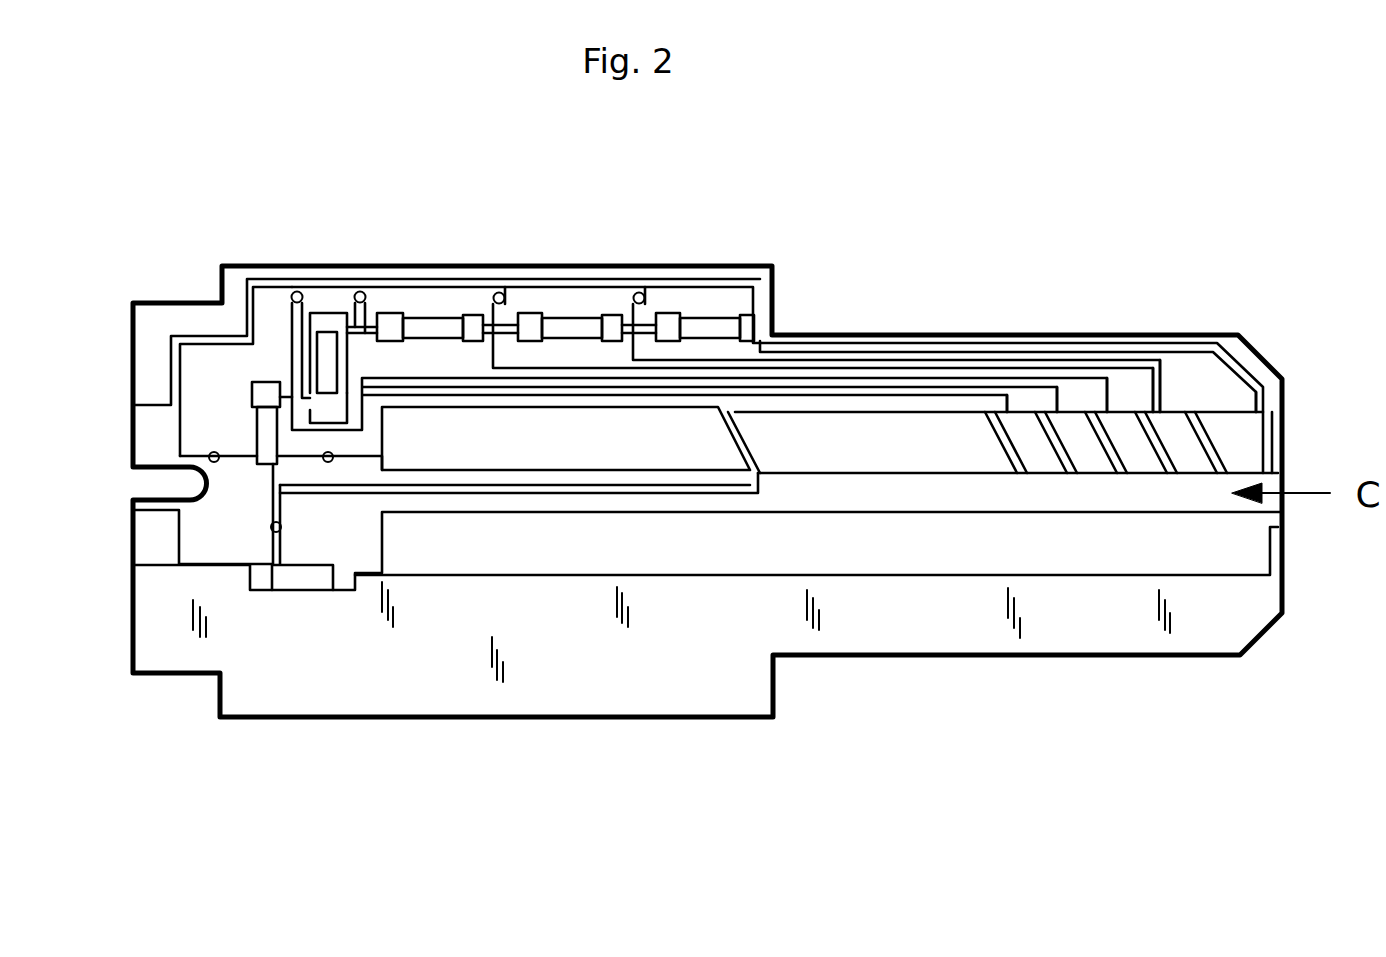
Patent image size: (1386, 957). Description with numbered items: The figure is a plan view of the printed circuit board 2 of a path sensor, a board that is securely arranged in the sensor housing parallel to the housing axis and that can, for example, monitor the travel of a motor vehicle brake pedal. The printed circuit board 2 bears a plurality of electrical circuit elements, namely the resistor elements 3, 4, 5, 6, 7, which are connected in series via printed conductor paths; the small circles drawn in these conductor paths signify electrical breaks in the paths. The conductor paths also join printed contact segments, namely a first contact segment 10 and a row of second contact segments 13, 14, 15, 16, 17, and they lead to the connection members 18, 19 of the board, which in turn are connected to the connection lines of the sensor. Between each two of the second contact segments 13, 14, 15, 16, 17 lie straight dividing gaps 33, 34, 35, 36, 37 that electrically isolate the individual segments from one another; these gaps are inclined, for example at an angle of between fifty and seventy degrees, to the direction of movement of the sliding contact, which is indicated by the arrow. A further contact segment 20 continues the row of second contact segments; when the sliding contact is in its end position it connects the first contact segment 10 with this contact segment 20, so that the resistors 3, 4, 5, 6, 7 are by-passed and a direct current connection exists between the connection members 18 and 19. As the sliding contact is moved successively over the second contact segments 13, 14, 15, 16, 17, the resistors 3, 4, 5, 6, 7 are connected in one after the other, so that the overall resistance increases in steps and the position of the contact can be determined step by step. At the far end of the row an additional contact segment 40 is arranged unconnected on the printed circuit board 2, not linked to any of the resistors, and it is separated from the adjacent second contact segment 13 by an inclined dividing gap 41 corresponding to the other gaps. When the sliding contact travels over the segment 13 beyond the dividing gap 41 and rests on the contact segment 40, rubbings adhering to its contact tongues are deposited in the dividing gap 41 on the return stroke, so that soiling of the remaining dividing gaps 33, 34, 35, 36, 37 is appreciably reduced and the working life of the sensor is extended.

The printed circuit board 2 is at (613, 640).
The resistor element 3 is at (262, 438).
The resistor element 4 is at (323, 363).
The resistor element 5 is at (443, 330).
The resistor element 6 is at (585, 330).
The resistor element 7 is at (700, 333).
The first contact segment 10 is at (430, 545).
The second contact segment 13 is at (852, 435).
The second contact segment 14 is at (1033, 457).
The second contact segment 15 is at (1080, 460).
The second contact segment 16 is at (1127, 460).
The second contact segment 17 is at (1173, 458).
The connection member 18 is at (148, 445).
The connection member 19 is at (152, 527).
The contact segment 20 is at (1262, 456).
The dividing gap 33 is at (1007, 405).
The dividing gap 34 is at (1040, 437).
The dividing gap 35 is at (1097, 443).
The dividing gap 36 is at (1150, 447).
The dividing gap 37 is at (1210, 450).
The additional contact segment 40 is at (510, 430).
The dividing gap 41 is at (735, 437).